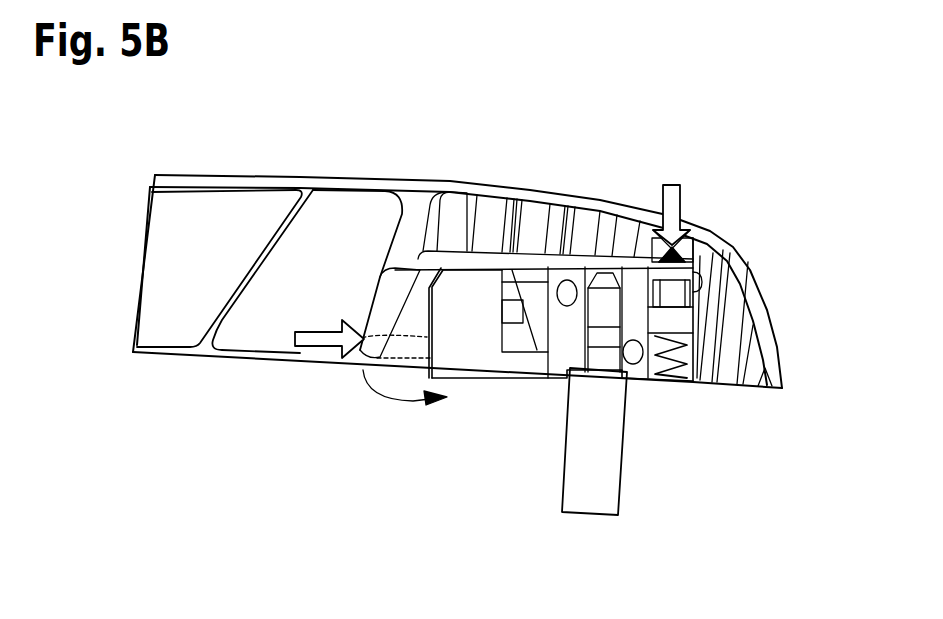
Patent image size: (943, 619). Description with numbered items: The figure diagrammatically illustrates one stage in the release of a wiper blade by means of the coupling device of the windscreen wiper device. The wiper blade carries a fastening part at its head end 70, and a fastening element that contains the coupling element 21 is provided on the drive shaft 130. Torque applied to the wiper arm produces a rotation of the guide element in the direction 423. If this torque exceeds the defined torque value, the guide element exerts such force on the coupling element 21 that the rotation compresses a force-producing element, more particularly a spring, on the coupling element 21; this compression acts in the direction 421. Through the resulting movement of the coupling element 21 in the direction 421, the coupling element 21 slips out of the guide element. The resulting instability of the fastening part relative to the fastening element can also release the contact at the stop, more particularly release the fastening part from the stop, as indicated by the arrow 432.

The head end 70 is at (545, 179).
The coupling element 21 is at (390, 315).
The direction of compression 421 is at (326, 338).
The direction of rotation 423 is at (407, 402).
The direction of release at the stop 432 is at (670, 200).
The drive shaft 130 is at (612, 473).